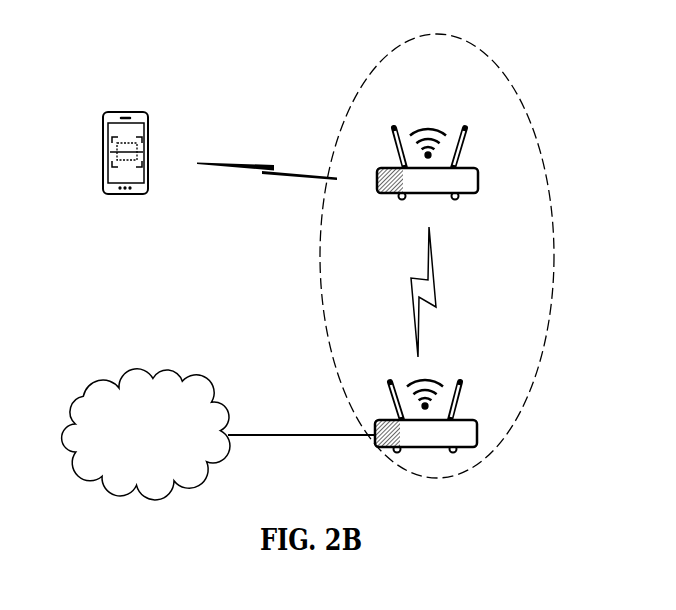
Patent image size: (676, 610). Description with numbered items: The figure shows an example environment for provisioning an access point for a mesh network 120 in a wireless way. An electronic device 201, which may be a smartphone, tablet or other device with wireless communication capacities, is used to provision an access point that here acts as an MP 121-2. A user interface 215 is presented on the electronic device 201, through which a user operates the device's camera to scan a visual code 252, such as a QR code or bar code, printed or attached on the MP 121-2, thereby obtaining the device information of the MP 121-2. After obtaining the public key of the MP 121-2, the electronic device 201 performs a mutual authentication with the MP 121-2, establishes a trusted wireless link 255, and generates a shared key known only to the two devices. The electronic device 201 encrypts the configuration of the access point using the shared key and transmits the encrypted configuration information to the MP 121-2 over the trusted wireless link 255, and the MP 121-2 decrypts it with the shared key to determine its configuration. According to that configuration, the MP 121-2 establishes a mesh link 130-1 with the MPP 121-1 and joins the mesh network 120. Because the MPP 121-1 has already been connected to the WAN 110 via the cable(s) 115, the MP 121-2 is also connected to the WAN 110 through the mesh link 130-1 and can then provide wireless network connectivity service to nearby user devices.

The mesh network 120 is at (495, 57).
The MP 121-2 is at (433, 154).
The visual code 252 is at (388, 167).
The mesh link 130-1 is at (427, 264).
The MPP 121-1 is at (463, 383).
The cable(s) 115 is at (270, 435).
The WAN 110 is at (195, 382).
The electronic device 201 is at (106, 140).
The user interface 215 is at (123, 112).
The trusted wireless link 255 is at (262, 165).